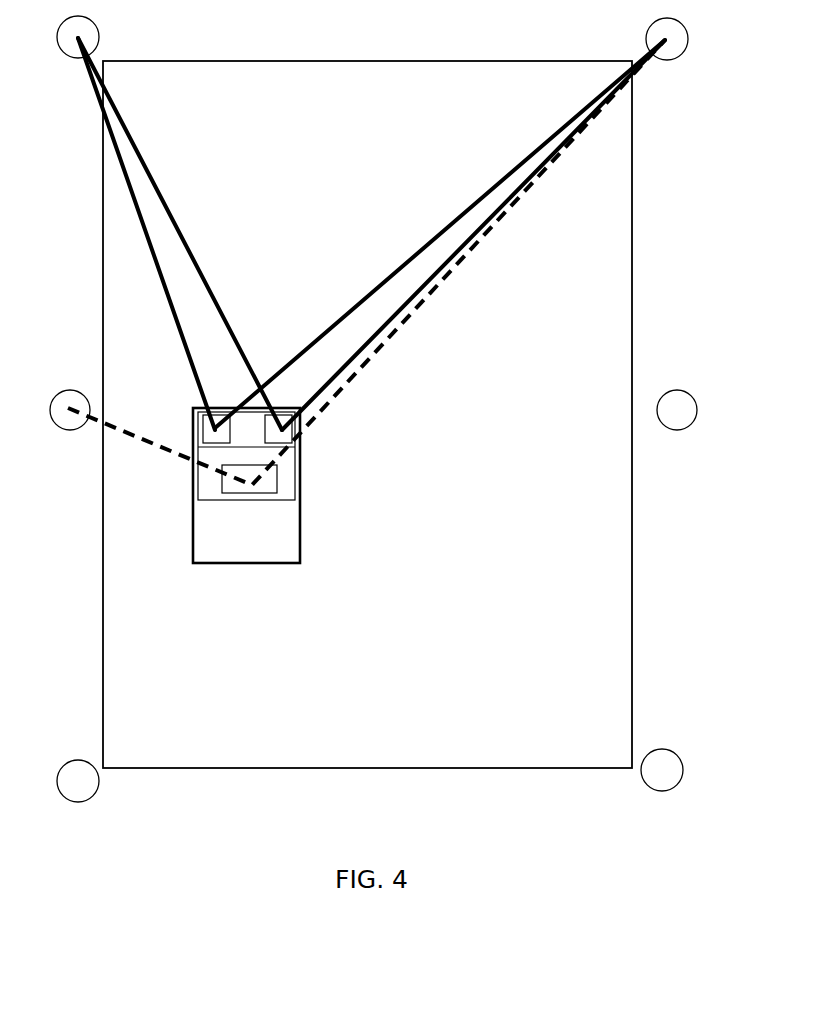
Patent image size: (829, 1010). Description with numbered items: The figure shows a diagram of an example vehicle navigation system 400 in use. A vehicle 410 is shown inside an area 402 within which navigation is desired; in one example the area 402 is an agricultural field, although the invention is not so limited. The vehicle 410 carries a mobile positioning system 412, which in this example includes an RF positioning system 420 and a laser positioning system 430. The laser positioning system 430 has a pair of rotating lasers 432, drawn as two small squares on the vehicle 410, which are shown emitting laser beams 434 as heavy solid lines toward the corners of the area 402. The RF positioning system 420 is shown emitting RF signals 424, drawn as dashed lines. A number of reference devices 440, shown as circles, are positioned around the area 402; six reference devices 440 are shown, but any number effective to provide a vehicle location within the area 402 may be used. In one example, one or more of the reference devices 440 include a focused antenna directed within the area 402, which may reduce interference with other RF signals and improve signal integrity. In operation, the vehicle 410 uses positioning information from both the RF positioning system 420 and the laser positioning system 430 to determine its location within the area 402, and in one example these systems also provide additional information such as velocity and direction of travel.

The vehicle navigation system 400 is at (540, 832).
The area 402 is at (142, 672).
The vehicle 410 is at (222, 522).
The mobile positioning system 412 is at (293, 460).
The RF positioning system 420 is at (270, 483).
The RF signals 424 is at (132, 430).
The laser positioning system 430 is at (296, 447).
The rotating lasers 432 is at (300, 424).
The laser beams 434 is at (157, 262).
The reference devices 440 is at (690, 410).